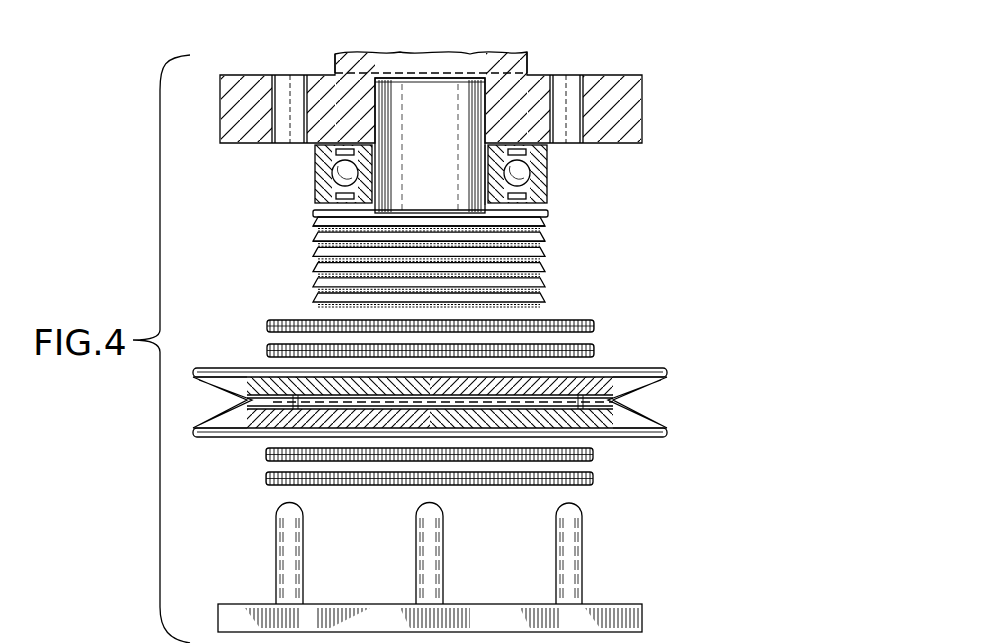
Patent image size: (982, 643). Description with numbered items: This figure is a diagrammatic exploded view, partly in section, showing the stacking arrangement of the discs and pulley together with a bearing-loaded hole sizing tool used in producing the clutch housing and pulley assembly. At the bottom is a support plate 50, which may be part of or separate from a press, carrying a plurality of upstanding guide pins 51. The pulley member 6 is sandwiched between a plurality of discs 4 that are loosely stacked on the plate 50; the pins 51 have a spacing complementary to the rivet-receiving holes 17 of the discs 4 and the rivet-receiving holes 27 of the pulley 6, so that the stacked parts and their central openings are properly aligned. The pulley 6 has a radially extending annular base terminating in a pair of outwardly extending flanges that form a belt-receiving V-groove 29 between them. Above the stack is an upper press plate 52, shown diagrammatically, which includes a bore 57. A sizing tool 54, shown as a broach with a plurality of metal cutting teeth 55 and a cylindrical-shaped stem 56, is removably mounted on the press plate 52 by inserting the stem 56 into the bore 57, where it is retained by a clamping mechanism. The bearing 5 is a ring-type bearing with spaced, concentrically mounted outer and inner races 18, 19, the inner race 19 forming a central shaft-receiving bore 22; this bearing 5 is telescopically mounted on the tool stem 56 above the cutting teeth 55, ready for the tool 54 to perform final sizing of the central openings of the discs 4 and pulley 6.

The discs 4 is at (267, 350).
The bearing 5 is at (545, 173).
The pulley member 6 is at (612, 398).
The rivet-receiving holes 17 is at (269, 320).
The outer race 18 is at (318, 176).
The inner race 19 is at (490, 182).
The shaft-receiving bore 22 is at (383, 163).
The rivet-receiving holes 27 is at (262, 438).
The belt-receiving V-groove 29 is at (635, 407).
The support plate 50 is at (626, 613).
The guide pins 51 is at (428, 556).
The press plate 52 is at (626, 100).
The sizing tool 54 is at (547, 265).
The metal cutting teeth 55 is at (322, 265).
The stem 56 is at (393, 100).
The bore 57 is at (485, 72).